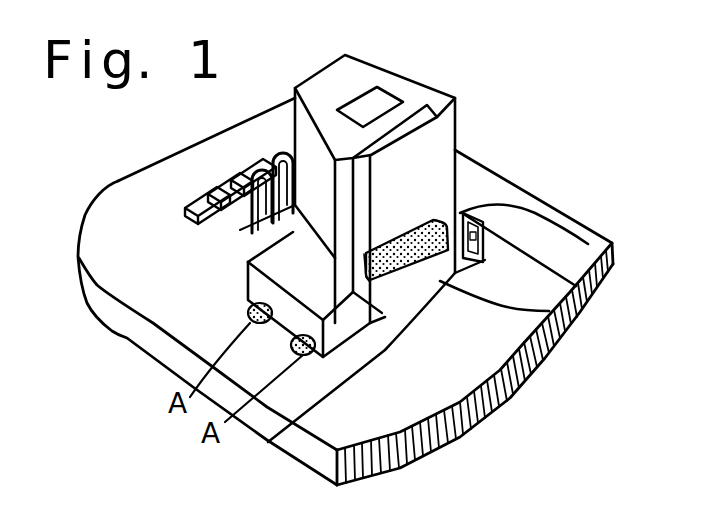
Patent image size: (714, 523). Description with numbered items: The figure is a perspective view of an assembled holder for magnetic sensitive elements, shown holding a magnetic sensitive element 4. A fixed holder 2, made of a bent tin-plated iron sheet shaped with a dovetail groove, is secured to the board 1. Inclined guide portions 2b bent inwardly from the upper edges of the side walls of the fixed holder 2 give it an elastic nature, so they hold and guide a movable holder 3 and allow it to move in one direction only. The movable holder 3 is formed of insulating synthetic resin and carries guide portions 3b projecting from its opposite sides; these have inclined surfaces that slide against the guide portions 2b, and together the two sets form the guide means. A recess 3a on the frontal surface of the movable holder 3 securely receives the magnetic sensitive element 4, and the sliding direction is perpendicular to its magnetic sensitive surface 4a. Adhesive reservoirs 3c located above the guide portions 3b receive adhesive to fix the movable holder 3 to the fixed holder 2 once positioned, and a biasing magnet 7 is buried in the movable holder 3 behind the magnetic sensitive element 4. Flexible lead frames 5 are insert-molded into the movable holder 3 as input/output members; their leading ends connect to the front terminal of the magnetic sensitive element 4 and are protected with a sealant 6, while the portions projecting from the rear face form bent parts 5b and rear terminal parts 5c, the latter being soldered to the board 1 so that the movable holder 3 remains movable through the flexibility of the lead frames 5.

The board 1 is at (593, 232).
The fixed holder 2 is at (550, 306).
The guide portions 2b is at (558, 217).
The movable holder 3 is at (413, 84).
The recess 3a is at (428, 112).
The guide portions 3b is at (247, 285).
The adhesive reservoirs 3c is at (247, 265).
The magnetic sensitive element 4 is at (435, 175).
The magnetic sensitive surface 4a is at (430, 148).
The flexible lead frames 5 is at (211, 153).
The bent parts 5b is at (258, 165).
The rear terminal parts 5c is at (232, 92).
The sealant 6 is at (505, 225).
The biasing magnet 7 is at (372, 100).